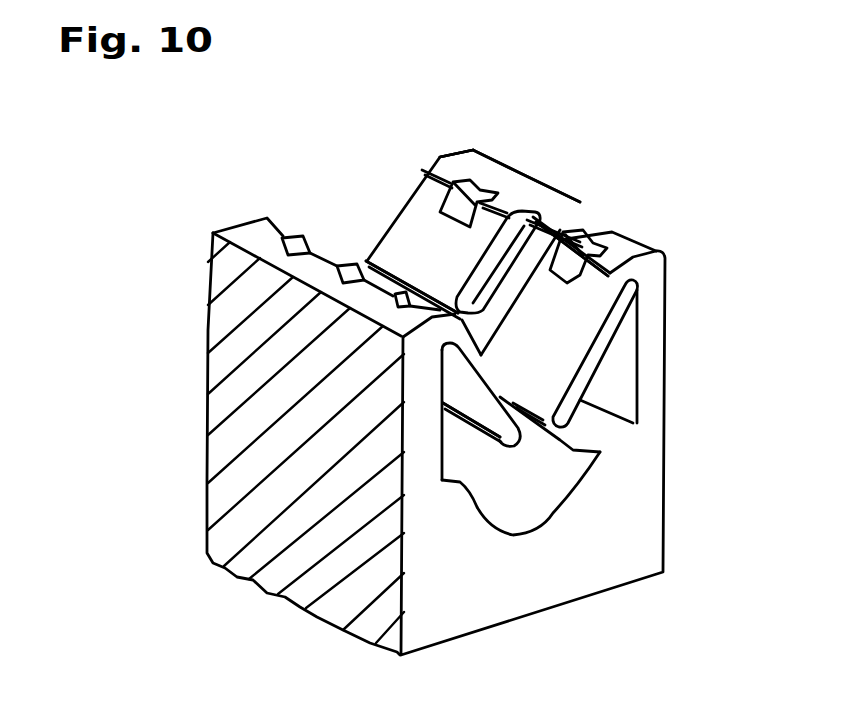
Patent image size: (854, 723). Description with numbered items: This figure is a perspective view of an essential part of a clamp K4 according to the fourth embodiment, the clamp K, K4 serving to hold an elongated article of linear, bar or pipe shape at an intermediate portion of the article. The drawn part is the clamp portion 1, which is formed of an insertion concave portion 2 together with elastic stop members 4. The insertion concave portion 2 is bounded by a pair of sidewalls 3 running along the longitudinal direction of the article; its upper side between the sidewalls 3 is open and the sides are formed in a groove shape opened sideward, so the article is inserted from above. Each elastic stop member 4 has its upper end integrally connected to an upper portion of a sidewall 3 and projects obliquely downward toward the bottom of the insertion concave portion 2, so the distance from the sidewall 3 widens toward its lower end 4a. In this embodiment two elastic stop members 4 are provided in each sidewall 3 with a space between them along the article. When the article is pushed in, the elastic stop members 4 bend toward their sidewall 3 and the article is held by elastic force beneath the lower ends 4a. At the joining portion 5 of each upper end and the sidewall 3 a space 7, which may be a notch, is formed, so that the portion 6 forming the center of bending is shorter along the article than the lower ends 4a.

The clamp portion 1 is at (362, 133).
The insertion concave portion 2 is at (553, 498).
The sidewall 3 is at (633, 378).
The elastic stop member 4 is at (398, 247).
The lower end of elastic stop member 4a is at (553, 228).
The joining portion 5 is at (337, 250).
The portion which is a center of bending 6 is at (393, 320).
The space 7 is at (300, 240).
The clamp K is at (492, 132).
The clamp according to the fourth embodiment K4 is at (505, 97).